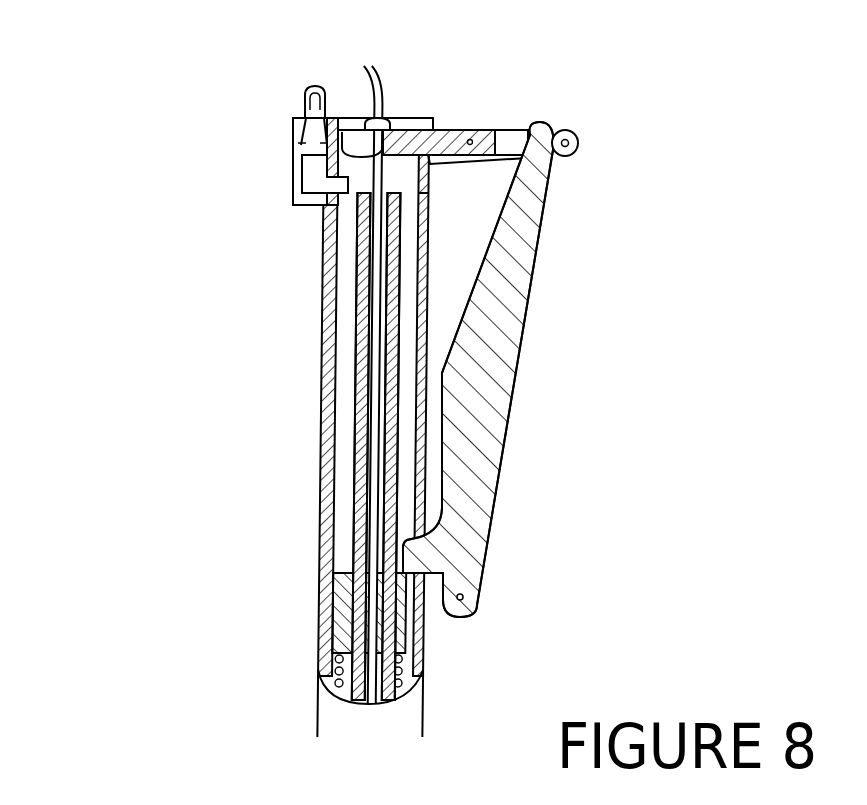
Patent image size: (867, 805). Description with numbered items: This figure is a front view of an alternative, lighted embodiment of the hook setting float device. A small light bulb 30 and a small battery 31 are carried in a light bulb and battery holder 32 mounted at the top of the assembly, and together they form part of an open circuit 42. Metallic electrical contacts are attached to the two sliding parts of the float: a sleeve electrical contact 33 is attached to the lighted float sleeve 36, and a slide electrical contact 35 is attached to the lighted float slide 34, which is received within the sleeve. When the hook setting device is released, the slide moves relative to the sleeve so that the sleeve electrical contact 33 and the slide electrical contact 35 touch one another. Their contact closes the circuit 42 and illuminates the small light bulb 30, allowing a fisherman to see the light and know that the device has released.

The light bulb 30 is at (310, 102).
The open circuit 42 is at (297, 128).
The battery 31 is at (313, 167).
The light bulb and battery holder 32 is at (328, 181).
The sleeve electrical contact 33 is at (297, 204).
The lighted float slide 34 is at (357, 479).
The slide electrical contact 35 is at (407, 578).
The lighted float sleeve 36 is at (335, 703).